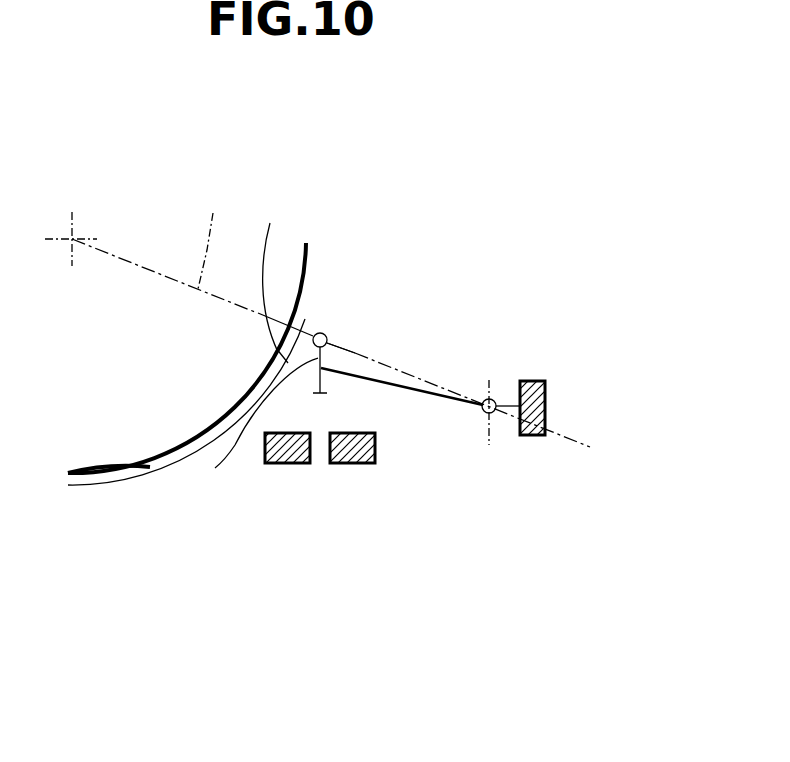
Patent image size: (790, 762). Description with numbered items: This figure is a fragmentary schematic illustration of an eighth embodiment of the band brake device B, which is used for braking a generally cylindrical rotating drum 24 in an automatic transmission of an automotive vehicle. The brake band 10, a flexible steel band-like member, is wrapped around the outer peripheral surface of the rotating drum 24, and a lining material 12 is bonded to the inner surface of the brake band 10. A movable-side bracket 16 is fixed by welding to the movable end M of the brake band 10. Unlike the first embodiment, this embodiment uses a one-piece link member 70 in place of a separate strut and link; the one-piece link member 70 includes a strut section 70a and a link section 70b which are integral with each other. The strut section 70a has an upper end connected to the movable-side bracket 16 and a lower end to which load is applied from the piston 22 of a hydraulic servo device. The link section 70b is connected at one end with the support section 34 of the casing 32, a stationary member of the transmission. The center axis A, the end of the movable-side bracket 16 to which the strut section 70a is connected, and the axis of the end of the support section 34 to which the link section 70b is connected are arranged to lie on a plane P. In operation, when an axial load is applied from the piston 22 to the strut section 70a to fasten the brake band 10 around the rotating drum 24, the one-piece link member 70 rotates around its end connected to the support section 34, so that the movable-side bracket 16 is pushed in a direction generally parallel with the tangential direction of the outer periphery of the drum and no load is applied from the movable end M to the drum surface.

The brake band 10 is at (113, 487).
The lining material 12 is at (150, 467).
The movable-side bracket 16 is at (321, 333).
The piston 22 is at (319, 480).
The rotating drum 24 is at (290, 264).
The casing 32 is at (547, 407).
The support section 34 is at (495, 400).
The one-piece link member 70 is at (388, 370).
The strut section 70a is at (248, 435).
The link section 70b is at (438, 392).
The center axis A is at (72, 239).
The plane P is at (207, 238).
The movable end M is at (276, 278).
The band brake device B is at (352, 180).